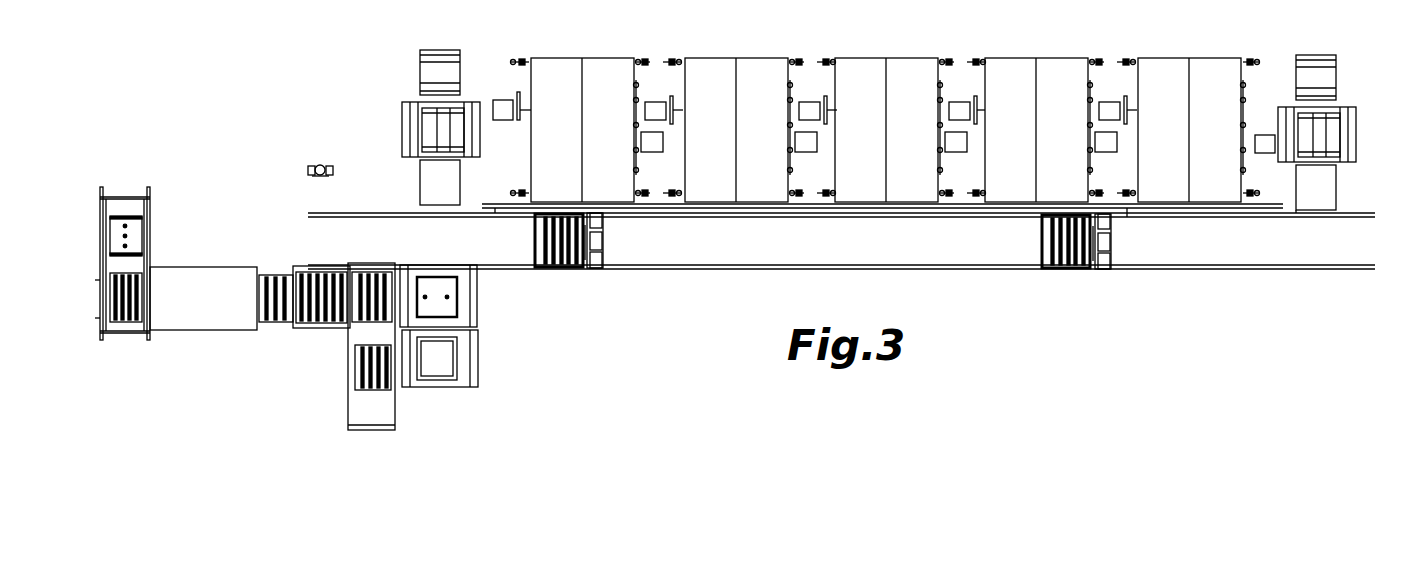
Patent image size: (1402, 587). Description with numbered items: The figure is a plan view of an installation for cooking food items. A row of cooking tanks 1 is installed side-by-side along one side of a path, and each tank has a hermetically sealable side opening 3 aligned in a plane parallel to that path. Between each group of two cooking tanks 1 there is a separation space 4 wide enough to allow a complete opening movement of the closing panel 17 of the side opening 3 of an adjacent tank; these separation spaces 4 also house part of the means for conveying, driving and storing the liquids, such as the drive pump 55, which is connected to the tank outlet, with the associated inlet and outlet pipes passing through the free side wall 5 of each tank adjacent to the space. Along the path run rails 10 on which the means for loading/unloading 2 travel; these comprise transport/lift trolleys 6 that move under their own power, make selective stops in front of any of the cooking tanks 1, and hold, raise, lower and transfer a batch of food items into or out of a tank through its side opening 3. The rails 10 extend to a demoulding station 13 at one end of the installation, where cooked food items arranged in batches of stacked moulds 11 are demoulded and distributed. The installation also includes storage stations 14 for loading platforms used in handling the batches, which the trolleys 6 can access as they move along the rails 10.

The cooking tank 1 is at (556, 65).
The means for loading/unloading 2 is at (617, 243).
The side opening 3 is at (623, 207).
The separation space 4 is at (807, 83).
The free side wall 5 is at (952, 63).
The drive pump 55 is at (962, 105).
The transport/lift trolley 6 is at (593, 269).
The rails 10 is at (932, 270).
The stacked moulds 11 is at (562, 266).
The demoulding station 13 is at (275, 246).
The storage station 14 is at (393, 115).
The closing panel 17 is at (495, 205).